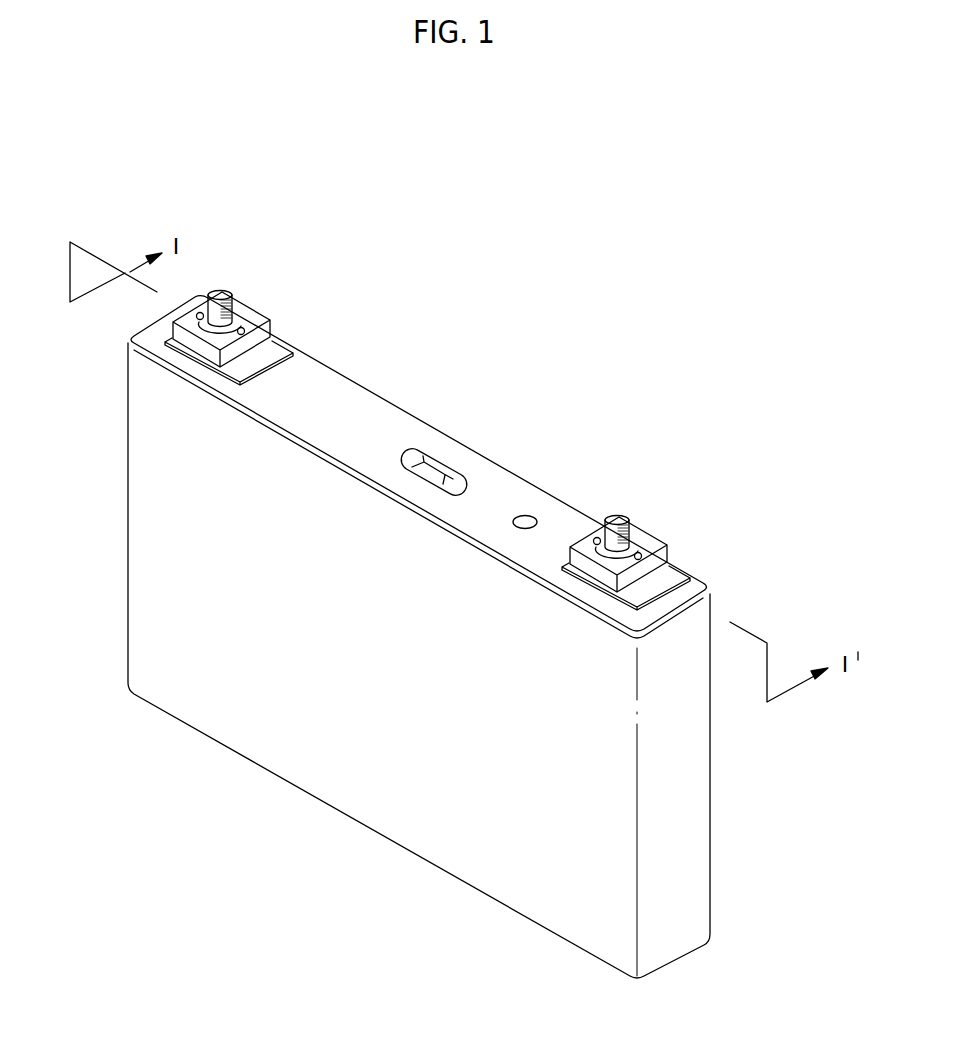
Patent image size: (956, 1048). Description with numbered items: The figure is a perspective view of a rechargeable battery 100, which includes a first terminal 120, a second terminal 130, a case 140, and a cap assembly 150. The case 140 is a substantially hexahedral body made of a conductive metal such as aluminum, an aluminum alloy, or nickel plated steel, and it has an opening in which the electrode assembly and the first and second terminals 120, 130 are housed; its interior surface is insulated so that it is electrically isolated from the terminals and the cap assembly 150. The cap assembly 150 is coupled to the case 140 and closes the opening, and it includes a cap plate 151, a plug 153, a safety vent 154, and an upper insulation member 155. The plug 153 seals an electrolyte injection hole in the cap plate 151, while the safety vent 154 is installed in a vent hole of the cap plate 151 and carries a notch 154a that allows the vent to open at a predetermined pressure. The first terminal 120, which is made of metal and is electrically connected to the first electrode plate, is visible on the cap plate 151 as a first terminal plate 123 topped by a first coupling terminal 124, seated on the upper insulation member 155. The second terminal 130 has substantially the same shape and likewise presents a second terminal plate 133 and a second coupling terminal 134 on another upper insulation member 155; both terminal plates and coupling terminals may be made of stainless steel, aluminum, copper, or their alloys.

The rechargeable battery 100 is at (740, 244).
The first terminal 120 is at (248, 276).
The first terminal plate 123 is at (252, 304).
The first coupling terminal 124 is at (218, 279).
The second terminal 130 is at (645, 505).
The second terminal plate 133 is at (652, 538).
The second coupling terminal 134 is at (628, 513).
The case 140 is at (358, 805).
The cap assembly 150 is at (397, 409).
The cap plate 151 is at (338, 382).
The plug 153 is at (524, 516).
The safety vent 154 is at (437, 455).
The notch 154a is at (443, 474).
The upper insulation member 155 is at (268, 355).